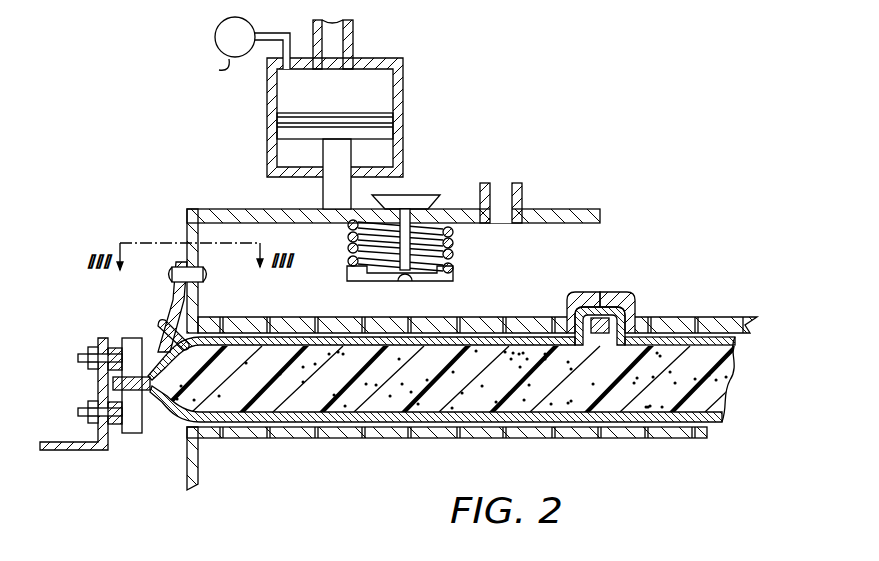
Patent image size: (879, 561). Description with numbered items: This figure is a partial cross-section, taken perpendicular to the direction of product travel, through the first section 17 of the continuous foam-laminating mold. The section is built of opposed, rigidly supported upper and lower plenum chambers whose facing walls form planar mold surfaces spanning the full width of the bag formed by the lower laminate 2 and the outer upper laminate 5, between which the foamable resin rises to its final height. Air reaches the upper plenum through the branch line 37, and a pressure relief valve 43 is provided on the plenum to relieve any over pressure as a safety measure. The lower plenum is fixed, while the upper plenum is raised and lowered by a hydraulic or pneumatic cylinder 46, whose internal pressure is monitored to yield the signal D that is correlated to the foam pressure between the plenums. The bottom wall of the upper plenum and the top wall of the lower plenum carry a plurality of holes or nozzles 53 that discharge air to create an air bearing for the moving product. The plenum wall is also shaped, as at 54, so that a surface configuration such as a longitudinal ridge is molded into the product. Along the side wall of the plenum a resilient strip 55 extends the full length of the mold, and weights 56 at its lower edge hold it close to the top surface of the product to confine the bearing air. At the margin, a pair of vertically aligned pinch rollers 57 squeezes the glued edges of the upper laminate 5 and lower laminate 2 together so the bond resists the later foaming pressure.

The lower laminate 2 is at (481, 418).
The outer upper laminate 5 is at (518, 333).
The first section 17 is at (597, 209).
The branch line 37 is at (522, 197).
The pressure relief valve 43 is at (463, 261).
The hydraulic or pneumatic cylinder 46 is at (403, 92).
The holes or nozzles 53 is at (313, 317).
The plenum wall configuration 54 is at (644, 272).
The resilient strip 55 is at (182, 297).
The weights 56 is at (162, 325).
The pinch rollers 57 is at (122, 345).